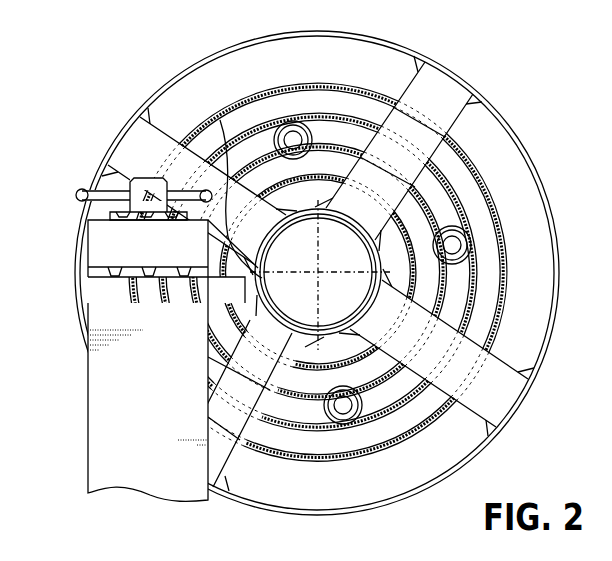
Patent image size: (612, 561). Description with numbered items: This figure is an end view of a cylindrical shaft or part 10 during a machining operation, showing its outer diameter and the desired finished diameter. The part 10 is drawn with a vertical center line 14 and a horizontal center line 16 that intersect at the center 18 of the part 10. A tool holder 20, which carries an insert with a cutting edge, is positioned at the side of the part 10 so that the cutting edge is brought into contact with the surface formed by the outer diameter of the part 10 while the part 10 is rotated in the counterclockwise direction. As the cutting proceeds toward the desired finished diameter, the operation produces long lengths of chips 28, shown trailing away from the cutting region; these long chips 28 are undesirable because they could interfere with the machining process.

The cylindrical shaft or part 10 is at (464, 88).
The vertical center line 14 is at (318, 249).
The horizontal center line 16 is at (380, 298).
The center 18 is at (318, 273).
The tool holder 20 is at (88, 405).
The long chips 28 is at (220, 120).